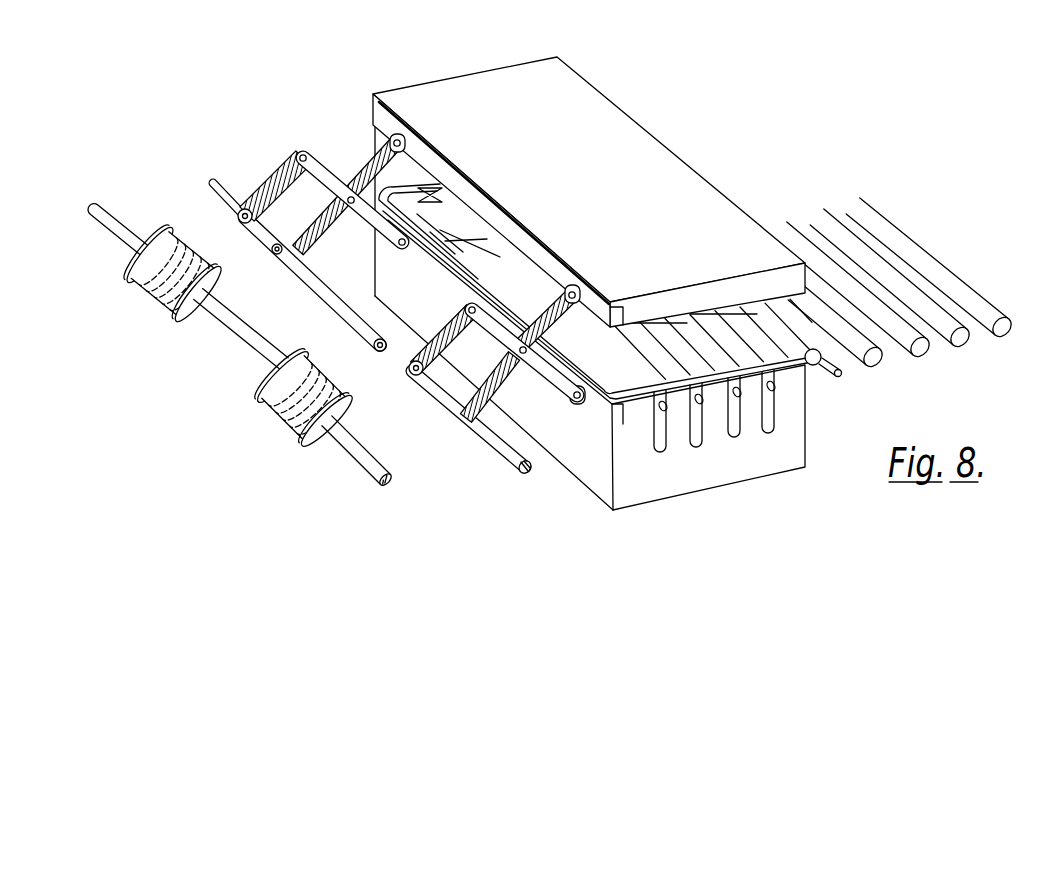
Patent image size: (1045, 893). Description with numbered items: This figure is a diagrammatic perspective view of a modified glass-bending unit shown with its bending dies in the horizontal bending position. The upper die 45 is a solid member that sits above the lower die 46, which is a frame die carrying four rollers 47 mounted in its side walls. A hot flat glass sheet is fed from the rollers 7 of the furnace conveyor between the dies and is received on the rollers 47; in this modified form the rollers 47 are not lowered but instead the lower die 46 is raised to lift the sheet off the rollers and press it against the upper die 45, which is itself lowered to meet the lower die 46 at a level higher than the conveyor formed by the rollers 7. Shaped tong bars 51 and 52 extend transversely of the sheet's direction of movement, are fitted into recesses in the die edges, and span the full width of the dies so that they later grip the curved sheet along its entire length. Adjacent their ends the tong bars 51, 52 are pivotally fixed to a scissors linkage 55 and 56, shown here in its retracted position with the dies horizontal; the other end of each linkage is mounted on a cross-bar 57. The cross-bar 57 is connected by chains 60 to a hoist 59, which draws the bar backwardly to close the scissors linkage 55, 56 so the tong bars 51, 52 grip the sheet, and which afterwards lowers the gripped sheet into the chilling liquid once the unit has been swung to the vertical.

The rollers 7 is at (882, 227).
The upper bending die 45 is at (568, 80).
The lower bending die 46 is at (597, 483).
The rollers 47 is at (600, 401).
The tong bar 51 is at (423, 170).
The tong bar 52 is at (440, 283).
The scissors linkage 55 is at (500, 397).
The scissors linkage 56 is at (332, 178).
The cross-bar 57 is at (472, 428).
The hoist 59 is at (158, 313).
The chains 60 is at (272, 252).